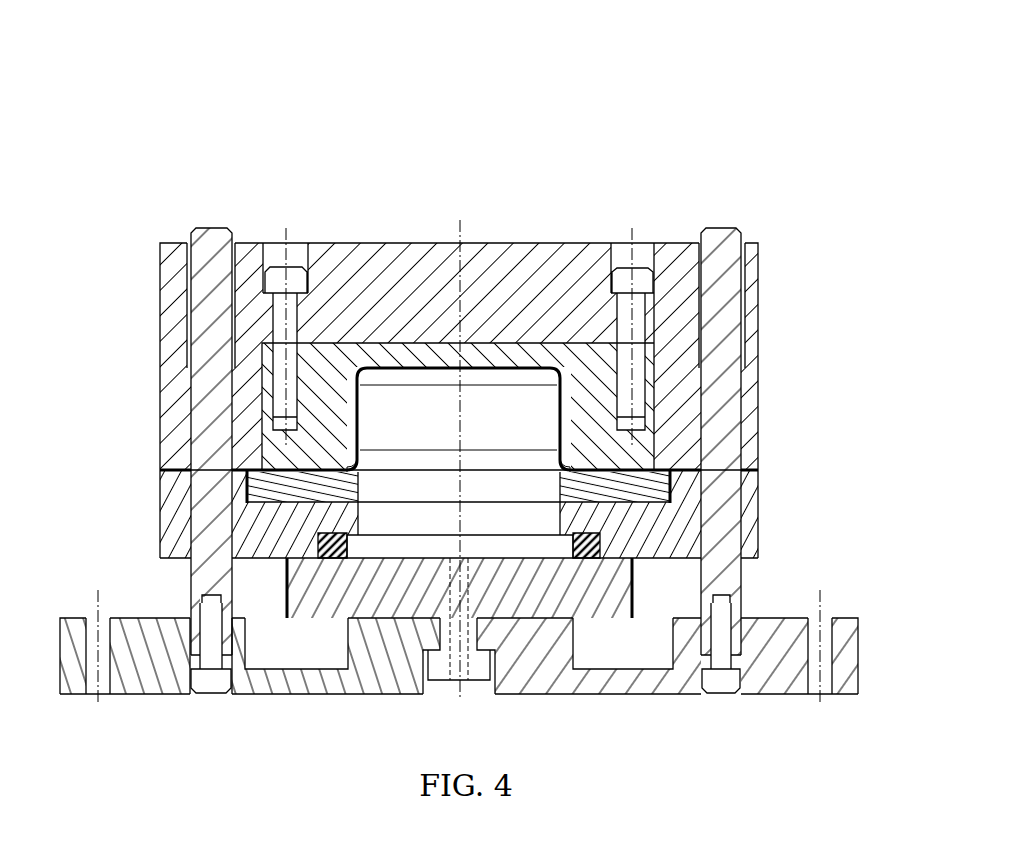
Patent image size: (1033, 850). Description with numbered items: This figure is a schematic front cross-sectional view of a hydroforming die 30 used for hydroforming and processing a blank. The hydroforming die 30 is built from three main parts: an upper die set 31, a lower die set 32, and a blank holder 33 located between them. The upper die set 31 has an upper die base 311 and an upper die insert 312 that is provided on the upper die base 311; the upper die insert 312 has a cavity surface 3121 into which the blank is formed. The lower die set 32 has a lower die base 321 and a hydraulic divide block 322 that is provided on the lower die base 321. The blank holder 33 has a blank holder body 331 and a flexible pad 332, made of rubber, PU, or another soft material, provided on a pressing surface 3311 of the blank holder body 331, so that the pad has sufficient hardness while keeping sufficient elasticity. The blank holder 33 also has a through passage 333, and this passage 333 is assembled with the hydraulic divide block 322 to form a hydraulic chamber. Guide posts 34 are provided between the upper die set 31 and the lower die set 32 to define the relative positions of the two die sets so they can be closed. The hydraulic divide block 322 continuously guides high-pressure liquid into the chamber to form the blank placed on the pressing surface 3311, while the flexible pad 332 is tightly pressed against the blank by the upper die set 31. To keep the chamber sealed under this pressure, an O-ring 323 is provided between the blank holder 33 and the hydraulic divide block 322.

The hydroforming die 30 is at (510, 92).
The upper die set 31 is at (370, 242).
The upper die base 311 is at (523, 264).
The upper die insert 312 is at (597, 423).
The cavity surface 3121 is at (567, 383).
The lower die set 32 is at (500, 696).
The lower die base 321 is at (537, 670).
The hydraulic divide block 322 is at (617, 590).
The O-ring 323 is at (600, 548).
The blank holder 33 is at (845, 476).
The blank holder body 331 is at (677, 520).
The flexible pad 332 is at (672, 492).
The through passage 333 is at (358, 492).
The pressing surface 3311 is at (700, 460).
The guide post 34 is at (214, 242).